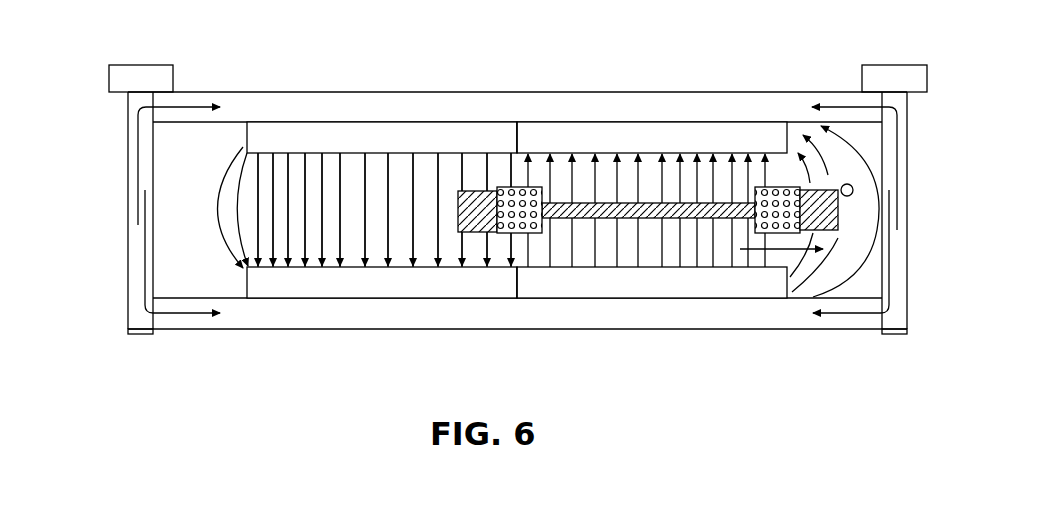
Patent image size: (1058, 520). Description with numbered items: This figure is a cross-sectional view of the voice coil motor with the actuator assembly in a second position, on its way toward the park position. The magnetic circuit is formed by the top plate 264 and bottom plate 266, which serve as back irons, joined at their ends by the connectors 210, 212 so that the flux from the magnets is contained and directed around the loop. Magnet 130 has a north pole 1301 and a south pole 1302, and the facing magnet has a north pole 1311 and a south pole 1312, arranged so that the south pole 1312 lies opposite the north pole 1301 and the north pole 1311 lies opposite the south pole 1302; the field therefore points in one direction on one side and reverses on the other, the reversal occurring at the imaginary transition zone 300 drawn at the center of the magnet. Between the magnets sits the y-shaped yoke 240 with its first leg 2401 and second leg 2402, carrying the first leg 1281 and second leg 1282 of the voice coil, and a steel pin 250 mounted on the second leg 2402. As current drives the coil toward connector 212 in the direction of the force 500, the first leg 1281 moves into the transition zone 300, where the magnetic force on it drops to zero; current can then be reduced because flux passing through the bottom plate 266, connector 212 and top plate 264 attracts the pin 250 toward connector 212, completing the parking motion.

The magnet 130 is at (499, 212).
The north pole of magnet 130 1301 is at (347, 287).
The south pole of magnet 130 1302 is at (697, 290).
The north pole of magnet 131 1311 is at (590, 133).
The south pole of magnet 131 1312 is at (427, 133).
The first leg of the voice coil 1281 is at (523, 187).
The second leg of the voice coil 1282 is at (785, 187).
The connector 210 is at (128, 213).
The connector 212 is at (907, 216).
The yoke 240 is at (630, 215).
The first leg of the yoke 2401 is at (452, 225).
The second leg of the yoke 2402 is at (838, 222).
The pin of ferromagnetic material 250 is at (853, 187).
The top plate 264 is at (452, 107).
The bottom plate 266 is at (484, 316).
The transition zone 300 is at (517, 285).
The force 500 is at (640, 200).